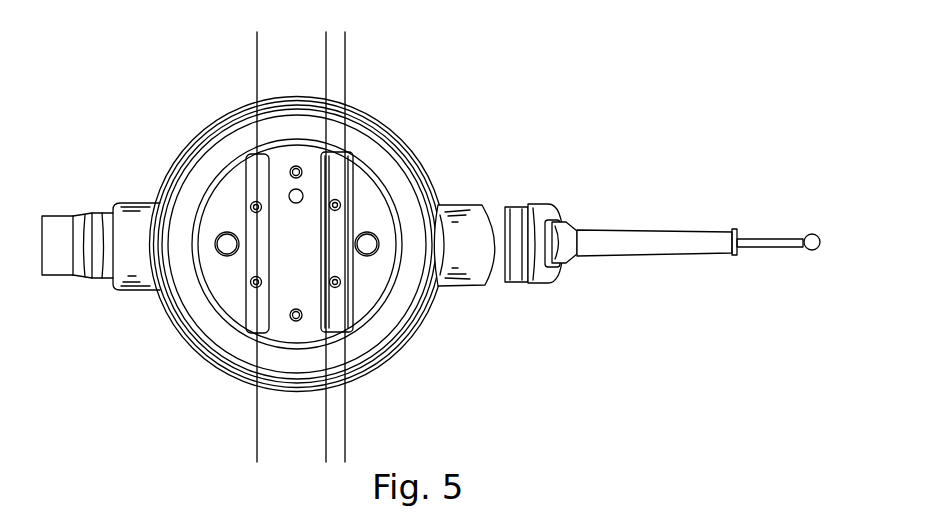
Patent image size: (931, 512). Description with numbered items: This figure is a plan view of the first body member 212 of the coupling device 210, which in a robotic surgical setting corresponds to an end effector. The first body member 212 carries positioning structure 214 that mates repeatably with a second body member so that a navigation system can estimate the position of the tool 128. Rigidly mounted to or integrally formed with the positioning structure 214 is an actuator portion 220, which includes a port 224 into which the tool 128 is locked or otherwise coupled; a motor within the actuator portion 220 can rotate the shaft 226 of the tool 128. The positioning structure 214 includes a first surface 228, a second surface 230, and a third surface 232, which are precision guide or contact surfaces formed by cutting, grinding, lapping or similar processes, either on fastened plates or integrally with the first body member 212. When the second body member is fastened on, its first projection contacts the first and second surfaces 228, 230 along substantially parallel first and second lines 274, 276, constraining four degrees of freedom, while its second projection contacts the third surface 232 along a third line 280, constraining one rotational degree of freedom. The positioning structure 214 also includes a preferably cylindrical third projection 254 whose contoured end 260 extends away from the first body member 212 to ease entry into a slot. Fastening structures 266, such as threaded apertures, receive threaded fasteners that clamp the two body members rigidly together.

The tool 128 is at (812, 234).
The device 210 is at (152, 348).
The first body member 212 is at (397, 186).
The positioning structure 214 is at (470, 328).
The actuator portion 220 is at (477, 237).
The port 224 is at (578, 222).
The shaft 226 is at (658, 243).
The first surface 228 is at (348, 180).
The second surface 230 is at (321, 182).
The third surface 232 is at (248, 175).
The third projection 254 is at (289, 193).
The end 260 is at (289, 197).
The fastening structures 266 is at (296, 165).
The first line 274 is at (345, 40).
The second line 276 is at (326, 40).
The third line 280 is at (257, 40).